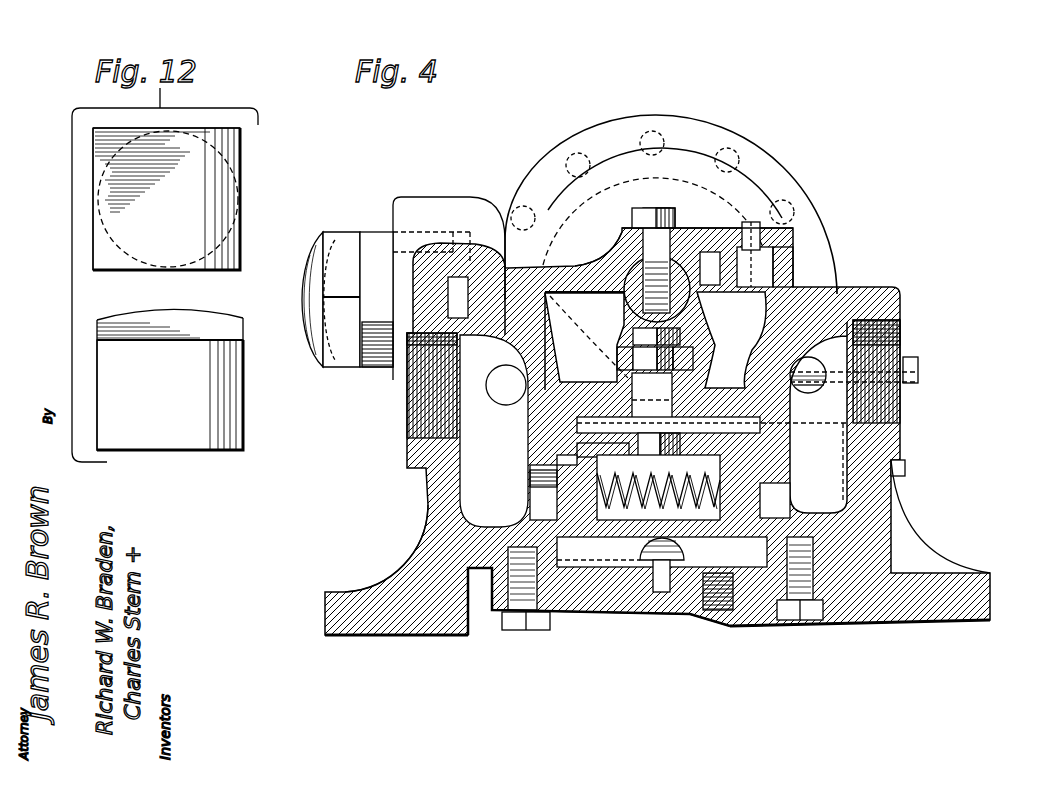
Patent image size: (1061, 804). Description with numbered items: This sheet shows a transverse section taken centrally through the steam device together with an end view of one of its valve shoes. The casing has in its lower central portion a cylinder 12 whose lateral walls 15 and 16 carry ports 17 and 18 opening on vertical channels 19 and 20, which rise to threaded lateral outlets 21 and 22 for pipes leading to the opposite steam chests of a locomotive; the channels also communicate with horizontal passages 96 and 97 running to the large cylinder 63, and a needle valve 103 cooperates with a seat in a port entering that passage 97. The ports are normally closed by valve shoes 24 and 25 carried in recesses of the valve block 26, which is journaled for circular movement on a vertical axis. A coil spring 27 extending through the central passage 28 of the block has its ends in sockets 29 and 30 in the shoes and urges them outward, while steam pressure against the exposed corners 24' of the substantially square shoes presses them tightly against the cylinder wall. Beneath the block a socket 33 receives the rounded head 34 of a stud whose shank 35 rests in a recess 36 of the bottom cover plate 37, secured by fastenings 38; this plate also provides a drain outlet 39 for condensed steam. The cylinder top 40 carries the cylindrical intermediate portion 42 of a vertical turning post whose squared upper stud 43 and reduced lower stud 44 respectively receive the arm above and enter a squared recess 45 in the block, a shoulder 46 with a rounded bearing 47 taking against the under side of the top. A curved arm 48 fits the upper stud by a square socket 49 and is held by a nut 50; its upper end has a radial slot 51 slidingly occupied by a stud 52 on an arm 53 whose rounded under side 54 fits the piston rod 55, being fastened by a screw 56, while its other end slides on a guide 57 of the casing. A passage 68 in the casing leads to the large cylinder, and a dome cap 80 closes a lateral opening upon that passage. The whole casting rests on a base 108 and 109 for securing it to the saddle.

In FIG. 4, the cylinder 12 is at (790, 428).
In FIG. 4, the lateral wall 15 is at (540, 445).
In FIG. 4, the lateral wall 16 is at (775, 445).
In FIG. 4, the port 17 is at (535, 497).
In FIG. 4, the port 18 is at (790, 497).
In FIG. 4, the channel 19 is at (494, 431).
In FIG. 4, the channel 20 is at (905, 470).
In FIG. 4, the threaded lateral outlet 21 is at (407, 413).
In FIG. 4, the threaded lateral outlet 22 is at (895, 410).
In FIG. 12, the valve shoe 24 is at (190, 271).
In FIG. 4, the valve shoe 24 is at (532, 461).
In FIG. 12, the corners of valve shoe 24' is at (130, 379).
In FIG. 4, the valve shoe 25 is at (776, 472).
In FIG. 4, the valve block 26 is at (620, 580).
In FIG. 4, the coil spring 27 is at (662, 552).
In FIG. 4, the passage 28 is at (709, 548).
In FIG. 4, the socket 29 is at (582, 450).
In FIG. 4, the socket 30 is at (760, 485).
In FIG. 4, the socket 33 is at (630, 585).
In FIG. 4, the rounded head 34 is at (648, 585).
In FIG. 4, the shank 35 is at (665, 575).
In FIG. 4, the recess 36 is at (660, 592).
In FIG. 4, the bottom cover plate 37 is at (752, 600).
In FIG. 4, the fastenings 38 is at (812, 622).
In FIG. 4, the drain outlet 39 is at (715, 612).
In FIG. 4, the cylinder top 40 is at (745, 390).
In FIG. 4, the cylindrical intermediate portion 42 is at (625, 382).
In FIG. 4, the upper stud 43 is at (625, 357).
In FIG. 4, the lower stud 44 is at (648, 448).
In FIG. 4, the recess 45 is at (741, 548).
In FIG. 4, the shoulder 46 is at (755, 428).
In FIG. 4, the rounded bearing 47 is at (640, 425).
In FIG. 4, the curved arm 48 is at (725, 298).
In FIG. 4, the square socket 49 is at (668, 352).
In FIG. 4, the nut 50 is at (633, 334).
In FIG. 4, the slot 51 is at (782, 262).
In FIG. 4, the stud 52 is at (755, 272).
In FIG. 4, the arm 53 is at (695, 238).
In FIG. 4, the rounded under side 54 is at (625, 250).
In FIG. 4, the piston rod 55 is at (600, 268).
In FIG. 4, the screw 56 is at (658, 208).
In FIG. 4, the guide 57 is at (548, 294).
In FIG. 4, the large cylinder 63 is at (612, 182).
In FIG. 4, the passage 68 is at (456, 268).
In FIG. 4, the dome cap 80 is at (308, 298).
In FIG. 4, the horizontal passage 96 is at (503, 395).
In FIG. 4, the horizontal passage 97 is at (812, 370).
In FIG. 4, the needle valve 103 is at (800, 386).
In FIG. 4, the base 108 is at (978, 593).
In FIG. 4, the base 109 is at (335, 615).